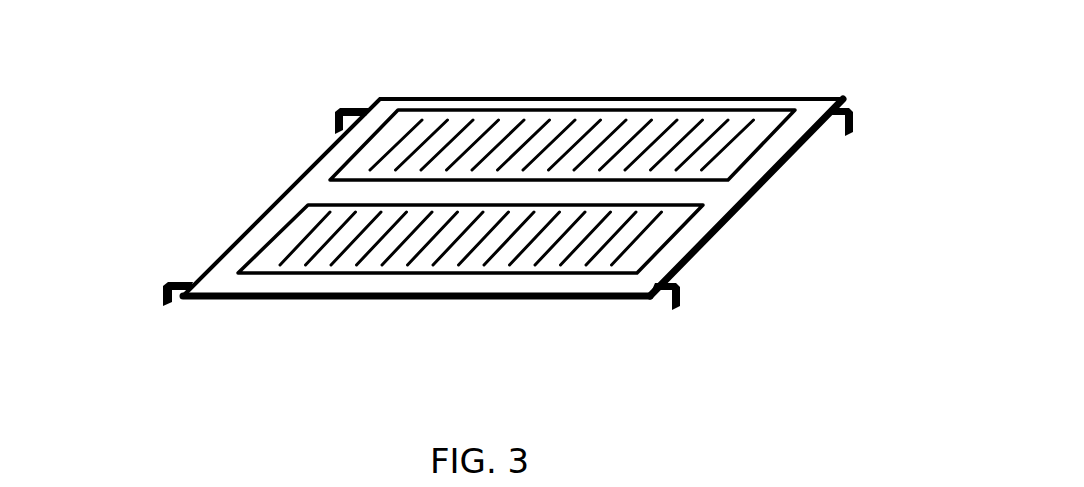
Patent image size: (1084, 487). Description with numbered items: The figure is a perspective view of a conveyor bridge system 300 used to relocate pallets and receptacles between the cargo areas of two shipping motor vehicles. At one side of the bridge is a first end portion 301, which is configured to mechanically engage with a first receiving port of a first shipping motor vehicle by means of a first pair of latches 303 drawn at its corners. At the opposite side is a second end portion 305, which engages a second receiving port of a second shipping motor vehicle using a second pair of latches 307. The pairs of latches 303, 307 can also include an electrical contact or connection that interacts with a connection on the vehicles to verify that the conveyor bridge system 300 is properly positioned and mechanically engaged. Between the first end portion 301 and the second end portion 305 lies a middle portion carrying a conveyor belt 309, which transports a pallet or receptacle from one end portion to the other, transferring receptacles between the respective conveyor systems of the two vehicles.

The conveyor bridge system 300 is at (83, 89).
The first end portion 301 is at (226, 236).
The first pair of latches 303 is at (323, 115).
The second end portion 305 is at (783, 179).
The second pair of latches 307 is at (866, 115).
The conveyor belt 309 is at (403, 284).